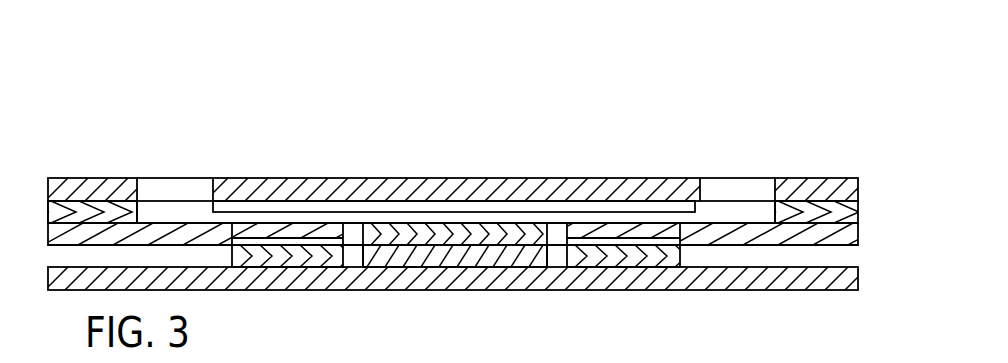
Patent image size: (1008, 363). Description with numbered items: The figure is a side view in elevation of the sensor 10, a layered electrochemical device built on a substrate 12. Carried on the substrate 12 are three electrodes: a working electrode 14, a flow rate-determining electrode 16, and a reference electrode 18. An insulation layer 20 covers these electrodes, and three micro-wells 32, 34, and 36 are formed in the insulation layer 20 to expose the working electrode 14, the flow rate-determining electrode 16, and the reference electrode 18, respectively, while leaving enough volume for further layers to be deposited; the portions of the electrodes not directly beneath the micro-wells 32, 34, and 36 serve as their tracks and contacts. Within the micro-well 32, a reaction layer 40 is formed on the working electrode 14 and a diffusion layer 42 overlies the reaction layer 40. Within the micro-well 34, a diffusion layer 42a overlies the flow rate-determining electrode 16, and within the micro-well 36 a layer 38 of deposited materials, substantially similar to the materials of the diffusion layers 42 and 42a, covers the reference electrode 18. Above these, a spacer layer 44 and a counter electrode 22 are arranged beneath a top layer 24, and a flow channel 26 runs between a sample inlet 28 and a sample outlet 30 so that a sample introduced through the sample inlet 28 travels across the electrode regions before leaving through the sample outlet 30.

The sensor 10 is at (76, 126).
The substrate 12 is at (835, 283).
The working electrode 14 is at (283, 258).
The flow rate-determining electrode 16 is at (418, 258).
The reference electrode 18 is at (620, 260).
The insulation layer 20 is at (735, 235).
The counter electrode 22 is at (398, 195).
The top layer 24 is at (826, 190).
The flow channel 26 is at (137, 212).
The sample inlet 28 is at (180, 190).
The sample outlet 30 is at (735, 190).
The micro-well 32 is at (333, 222).
The micro-well 34 is at (524, 222).
The micro-well 36 is at (645, 232).
The layer 38 is at (605, 232).
The reaction layer 40 is at (262, 232).
The diffusion layer 42 is at (290, 232).
The diffusion layer 42a is at (483, 232).
The spacer layer 44 is at (58, 212).